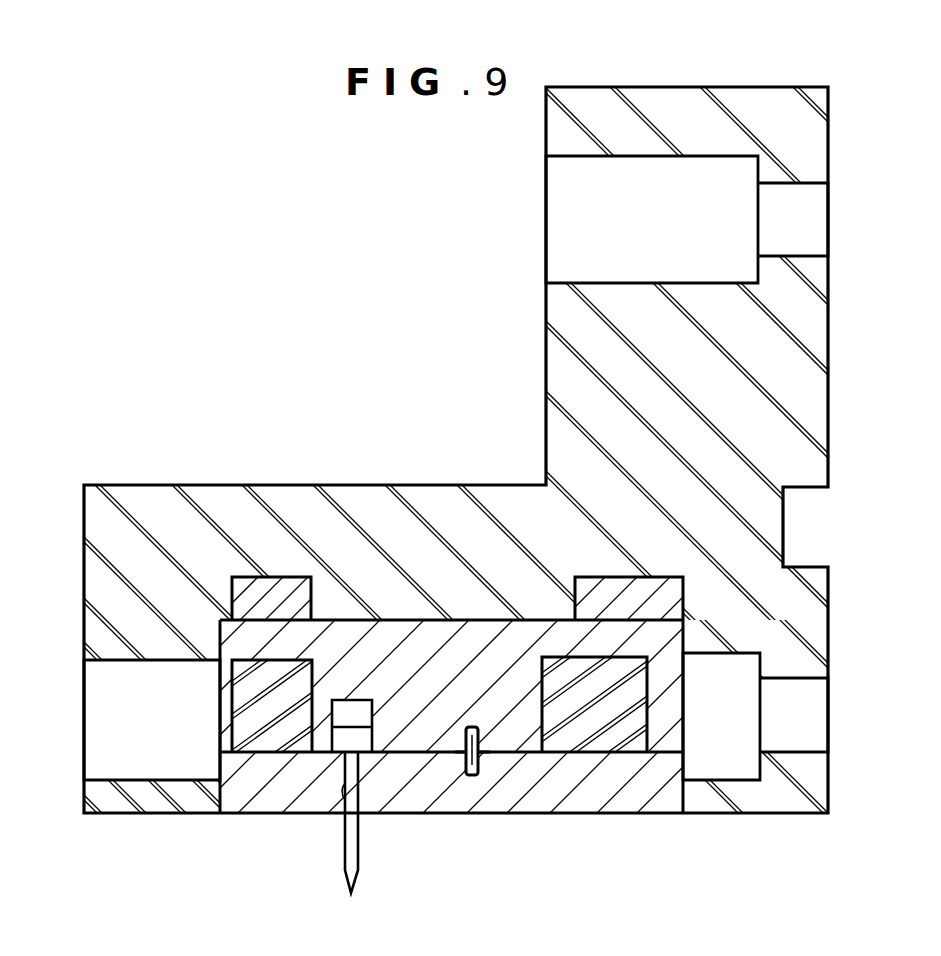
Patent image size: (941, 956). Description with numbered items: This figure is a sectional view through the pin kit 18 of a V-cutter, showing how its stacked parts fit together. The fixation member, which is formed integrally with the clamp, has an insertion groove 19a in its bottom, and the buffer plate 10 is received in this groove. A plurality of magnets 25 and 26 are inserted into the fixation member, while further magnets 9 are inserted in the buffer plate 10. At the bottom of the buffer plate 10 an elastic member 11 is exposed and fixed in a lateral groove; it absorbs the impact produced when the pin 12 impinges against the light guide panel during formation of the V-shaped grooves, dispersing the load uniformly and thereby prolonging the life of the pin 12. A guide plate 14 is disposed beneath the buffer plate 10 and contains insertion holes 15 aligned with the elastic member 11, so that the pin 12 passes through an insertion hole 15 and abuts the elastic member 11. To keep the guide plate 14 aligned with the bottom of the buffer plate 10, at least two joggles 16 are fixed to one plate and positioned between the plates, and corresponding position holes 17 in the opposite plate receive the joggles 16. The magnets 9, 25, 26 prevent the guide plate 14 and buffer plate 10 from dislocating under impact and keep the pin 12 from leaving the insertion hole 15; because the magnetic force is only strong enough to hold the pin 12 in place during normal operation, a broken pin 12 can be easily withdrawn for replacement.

The magnet 9 is at (625, 690).
The buffer plate 10 is at (518, 717).
The elastic member 11 is at (308, 715).
The pin 12 is at (362, 860).
The guide plate 14 is at (603, 787).
The insertion hole 15 is at (343, 740).
The joggle 16 is at (470, 738).
The position hole 17 is at (487, 773).
The pin kit 18 is at (673, 822).
The insertion groove 19a is at (473, 617).
The magnet 25 is at (665, 595).
The magnet 26 is at (258, 600).